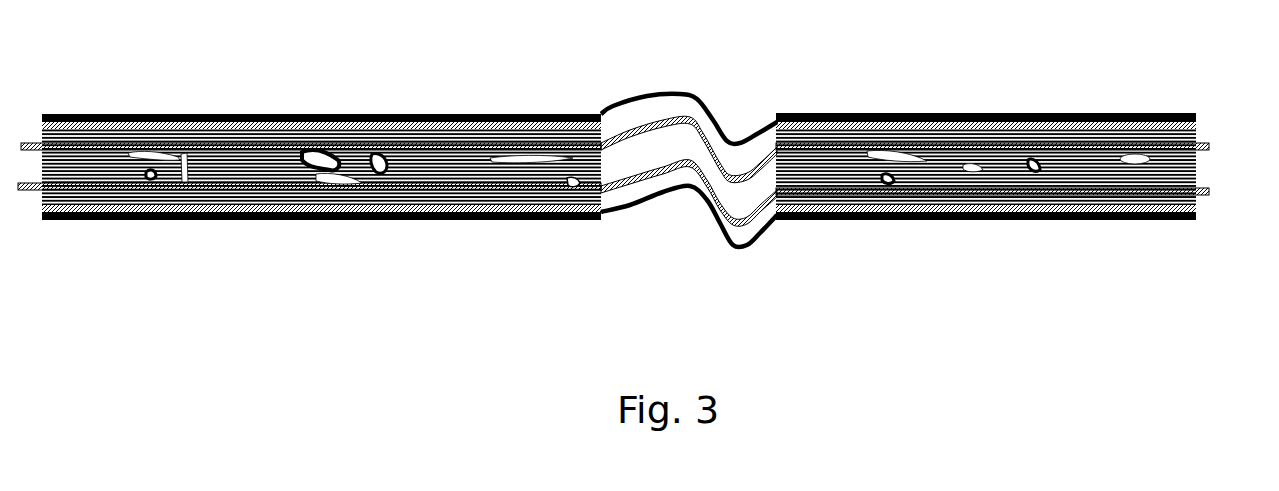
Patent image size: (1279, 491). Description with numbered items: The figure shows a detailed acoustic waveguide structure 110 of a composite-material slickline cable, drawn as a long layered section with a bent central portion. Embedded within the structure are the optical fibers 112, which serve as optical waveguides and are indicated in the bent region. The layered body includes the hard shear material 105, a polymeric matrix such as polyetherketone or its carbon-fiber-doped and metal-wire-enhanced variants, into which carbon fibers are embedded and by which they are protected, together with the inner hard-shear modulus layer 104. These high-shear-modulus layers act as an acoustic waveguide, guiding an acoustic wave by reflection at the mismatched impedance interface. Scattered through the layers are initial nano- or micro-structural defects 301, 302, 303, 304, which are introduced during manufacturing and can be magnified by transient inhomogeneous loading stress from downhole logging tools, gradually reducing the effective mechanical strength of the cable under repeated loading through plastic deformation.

The acoustic waveguide structure 110 is at (1088, 76).
The embedded optical fibers 112 is at (655, 120).
The hard shear material 105 is at (1195, 172).
The inner hard-shear modulus layer 104 is at (1195, 206).
The structural defect 301 is at (183, 163).
The structural defect 302 is at (312, 168).
The structural defect 303 is at (377, 173).
The structural defect 304 is at (887, 182).